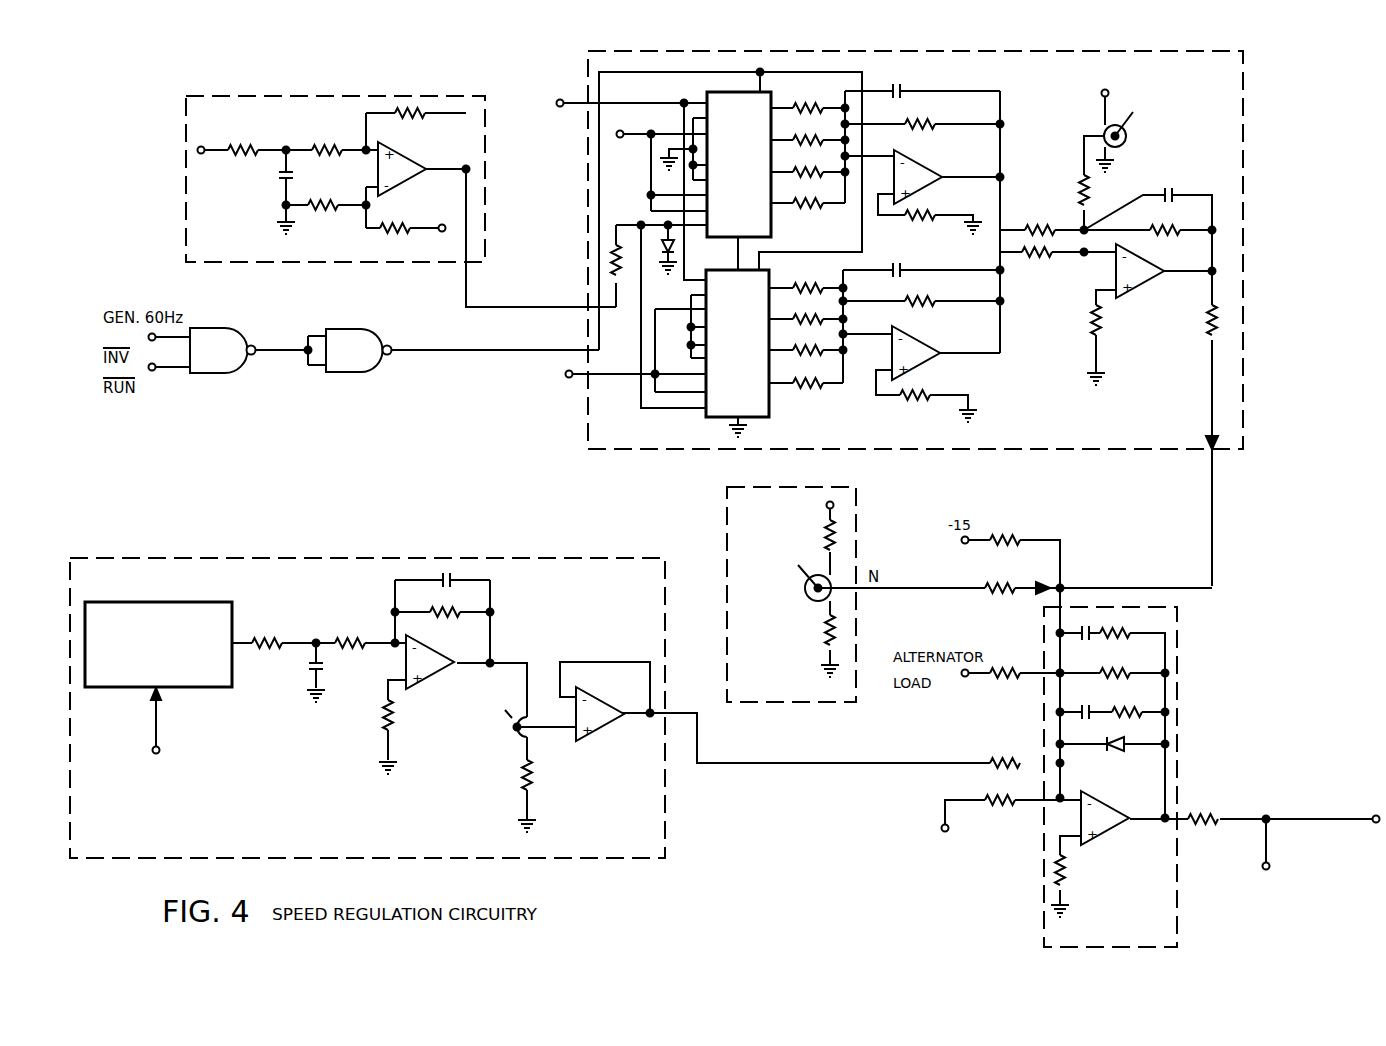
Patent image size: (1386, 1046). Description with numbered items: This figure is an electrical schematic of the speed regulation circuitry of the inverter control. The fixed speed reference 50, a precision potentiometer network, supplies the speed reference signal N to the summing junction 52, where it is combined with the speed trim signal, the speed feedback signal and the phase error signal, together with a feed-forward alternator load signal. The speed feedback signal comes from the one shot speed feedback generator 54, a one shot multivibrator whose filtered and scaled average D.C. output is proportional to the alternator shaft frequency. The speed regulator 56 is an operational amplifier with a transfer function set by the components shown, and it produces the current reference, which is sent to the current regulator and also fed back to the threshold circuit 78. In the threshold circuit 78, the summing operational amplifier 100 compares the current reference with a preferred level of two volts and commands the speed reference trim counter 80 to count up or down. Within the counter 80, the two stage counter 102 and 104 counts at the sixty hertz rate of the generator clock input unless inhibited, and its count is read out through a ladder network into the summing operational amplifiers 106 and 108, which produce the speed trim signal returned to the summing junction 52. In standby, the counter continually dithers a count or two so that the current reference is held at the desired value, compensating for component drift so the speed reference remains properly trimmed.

The fixed speed reference 50 is at (727, 500).
The summing junction 52 is at (1058, 800).
The one shot speed feedback generator 54 is at (330, 557).
The speed regulator 56 is at (1177, 656).
The threshold circuit 78 is at (310, 97).
The speed reference trim counter 80 is at (1246, 140).
The summing operational amplifier 100 is at (404, 158).
The counter stage 102 is at (707, 92).
The counter stage 104 is at (771, 400).
The summing operational amplifier 106 is at (933, 168).
The summing operational amplifier 108 is at (932, 360).